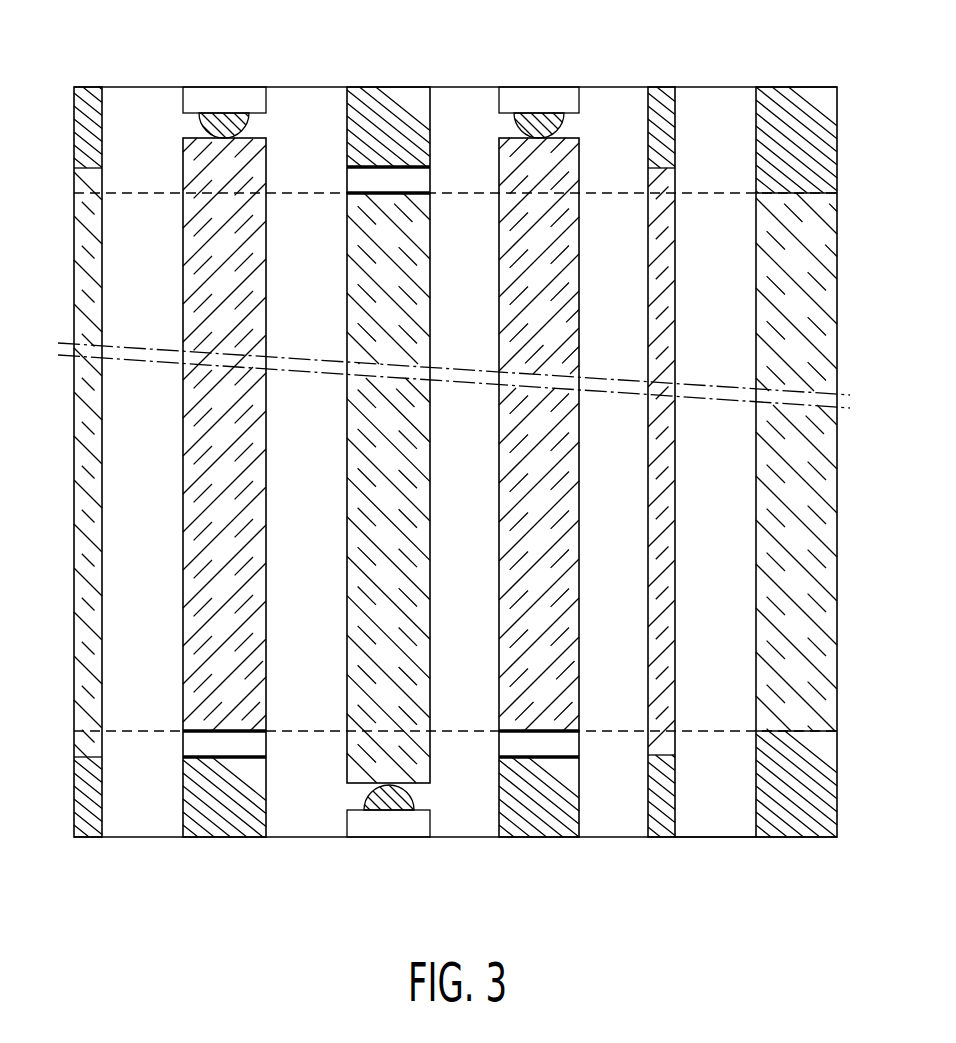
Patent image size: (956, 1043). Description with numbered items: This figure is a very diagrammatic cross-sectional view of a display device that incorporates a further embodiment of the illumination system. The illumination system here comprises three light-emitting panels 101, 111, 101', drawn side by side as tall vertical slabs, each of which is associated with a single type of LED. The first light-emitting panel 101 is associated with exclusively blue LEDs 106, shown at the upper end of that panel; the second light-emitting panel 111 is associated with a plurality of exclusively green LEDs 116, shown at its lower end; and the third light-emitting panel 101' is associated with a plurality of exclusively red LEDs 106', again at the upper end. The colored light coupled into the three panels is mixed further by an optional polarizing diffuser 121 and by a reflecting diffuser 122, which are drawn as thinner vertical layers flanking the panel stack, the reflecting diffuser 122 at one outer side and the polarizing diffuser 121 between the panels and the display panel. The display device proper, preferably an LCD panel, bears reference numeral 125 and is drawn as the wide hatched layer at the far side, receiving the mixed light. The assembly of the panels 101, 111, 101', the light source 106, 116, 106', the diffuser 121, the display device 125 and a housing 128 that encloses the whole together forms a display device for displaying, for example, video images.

The first light-emitting panel 101 is at (255, 487).
The third light-emitting panel 101' is at (567, 487).
The blue LEDs 106 is at (224, 85).
The red LEDs 106' is at (539, 85).
The second light-emitting panel 111 is at (415, 522).
The green LEDs 116 is at (380, 803).
The polarizing diffuser 121 is at (662, 250).
The reflecting diffuser 122 is at (90, 248).
The display device 125 is at (770, 324).
The housing 128 is at (716, 837).